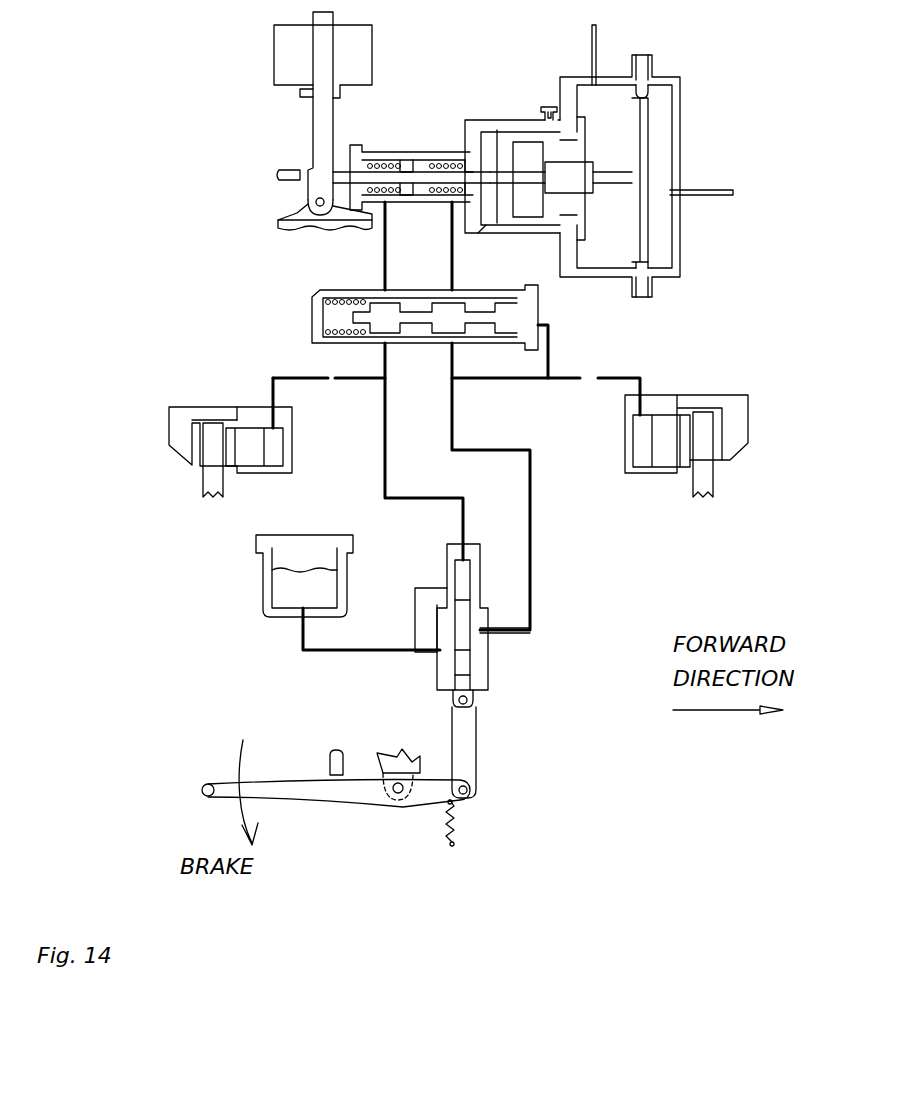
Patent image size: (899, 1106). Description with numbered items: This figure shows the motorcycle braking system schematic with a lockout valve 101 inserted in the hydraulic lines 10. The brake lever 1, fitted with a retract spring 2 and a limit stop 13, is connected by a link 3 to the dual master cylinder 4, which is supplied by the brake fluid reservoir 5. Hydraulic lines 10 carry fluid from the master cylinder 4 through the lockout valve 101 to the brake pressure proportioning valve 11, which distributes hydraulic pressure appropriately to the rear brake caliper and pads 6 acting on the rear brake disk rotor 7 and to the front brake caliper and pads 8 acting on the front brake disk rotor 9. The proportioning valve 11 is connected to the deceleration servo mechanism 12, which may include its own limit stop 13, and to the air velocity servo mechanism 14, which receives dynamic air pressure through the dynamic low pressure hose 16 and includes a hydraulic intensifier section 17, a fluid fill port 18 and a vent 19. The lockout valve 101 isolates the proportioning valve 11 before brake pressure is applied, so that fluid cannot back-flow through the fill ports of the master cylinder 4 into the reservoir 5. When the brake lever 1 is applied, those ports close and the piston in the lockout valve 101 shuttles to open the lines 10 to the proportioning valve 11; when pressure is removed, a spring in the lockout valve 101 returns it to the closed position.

The brake lever 1 is at (287, 803).
The retract spring 2 is at (447, 822).
The link 3 is at (477, 740).
The dual master cylinder 4 is at (490, 655).
The brake fluid reservoir 5 is at (265, 605).
The rear brake caliper and pads 6 is at (185, 407).
The rear brake disk rotor 7 is at (206, 485).
The front brake caliper and pads 8 is at (747, 412).
The front brake disk rotor 9 is at (713, 485).
The hydraulic lines 10 is at (278, 373).
The brake pressure proportioning valve 11 is at (433, 152).
The deceleration servo mechanism 12 is at (275, 66).
The limit stop 13 is at (275, 168).
The air velocity servo mechanism 14 is at (680, 233).
The dynamic low pressure hose 16 is at (597, 42).
The hydraulic intensifier section 17 is at (525, 158).
The fluid fill port 18 is at (548, 107).
The vent 19 is at (478, 228).
The lockout valve 101 is at (313, 303).